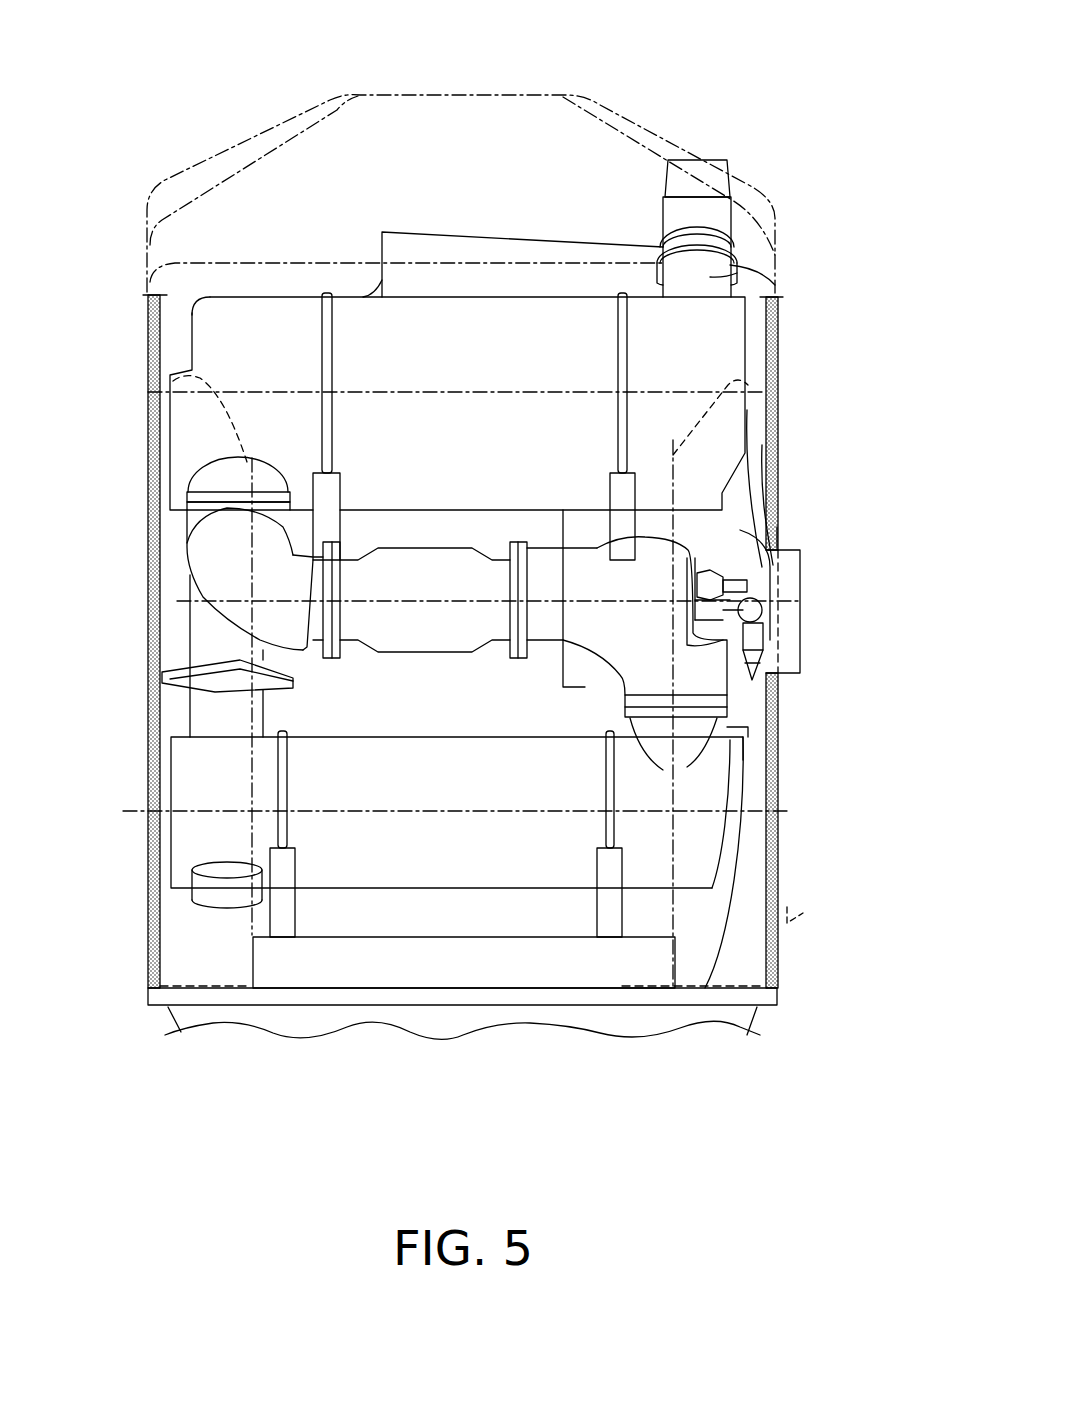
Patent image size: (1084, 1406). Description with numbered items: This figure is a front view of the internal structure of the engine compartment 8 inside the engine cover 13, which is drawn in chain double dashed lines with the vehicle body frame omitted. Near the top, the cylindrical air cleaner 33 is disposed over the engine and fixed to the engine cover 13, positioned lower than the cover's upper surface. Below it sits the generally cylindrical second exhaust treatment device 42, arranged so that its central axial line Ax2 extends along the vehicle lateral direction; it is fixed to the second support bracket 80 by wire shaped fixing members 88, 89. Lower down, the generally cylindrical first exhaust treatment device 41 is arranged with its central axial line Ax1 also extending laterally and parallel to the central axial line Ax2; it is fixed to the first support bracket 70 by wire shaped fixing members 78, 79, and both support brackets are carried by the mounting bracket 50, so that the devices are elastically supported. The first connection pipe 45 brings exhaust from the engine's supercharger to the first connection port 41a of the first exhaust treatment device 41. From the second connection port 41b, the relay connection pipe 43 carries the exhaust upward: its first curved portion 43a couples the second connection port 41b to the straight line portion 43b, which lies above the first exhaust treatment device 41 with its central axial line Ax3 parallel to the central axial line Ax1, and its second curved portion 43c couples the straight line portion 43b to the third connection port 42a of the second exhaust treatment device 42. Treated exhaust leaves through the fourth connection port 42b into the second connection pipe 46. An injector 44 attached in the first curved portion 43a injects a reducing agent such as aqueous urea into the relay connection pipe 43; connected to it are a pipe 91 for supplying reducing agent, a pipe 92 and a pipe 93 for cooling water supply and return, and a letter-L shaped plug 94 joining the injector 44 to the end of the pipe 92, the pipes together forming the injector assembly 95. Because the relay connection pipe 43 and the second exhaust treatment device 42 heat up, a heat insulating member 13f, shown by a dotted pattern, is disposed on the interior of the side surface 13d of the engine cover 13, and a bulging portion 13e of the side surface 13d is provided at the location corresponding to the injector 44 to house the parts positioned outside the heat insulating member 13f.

The engine compartment 8 is at (423, 160).
The engine cover 13 is at (645, 118).
The side surface 13d is at (824, 913).
The bulging portion 13e is at (805, 655).
The heat insulating member 13f is at (148, 943).
The air cleaner 33 is at (463, 247).
The first exhaust treatment device 41 is at (663, 858).
The first connection port 41a is at (210, 714).
The second connection port 41b is at (712, 732).
The second exhaust treatment device 42 is at (713, 347).
The third connection port 42a is at (222, 472).
The fourth connection port 42b is at (775, 283).
The relay connection pipe 43 is at (627, 490).
The first curved portion 43a is at (663, 657).
The straight line portion 43b is at (390, 570).
The second curved portion 43c is at (223, 543).
The injector 44 is at (710, 567).
The first connection pipe 45 is at (205, 652).
The second connection pipe 46 is at (710, 210).
The mounting bracket 50 is at (610, 1023).
The first support bracket 70 is at (650, 967).
The wire shaped fixing member 78 is at (290, 826).
The wire shaped fixing member 79 is at (603, 830).
The second support bracket 80 is at (650, 537).
The wire shaped fixing member 88 is at (330, 293).
The wire shaped fixing member 89 is at (622, 293).
The pipe 91 is at (757, 690).
The pipe 92 is at (777, 540).
The pipe 93 is at (780, 577).
The letter-L shaped plug 94 is at (757, 613).
The injector assembly 95 is at (773, 640).
The central axial line Ax1 is at (123, 817).
The central axial line Ax2 is at (777, 408).
The central axial line Ax3 is at (186, 607).